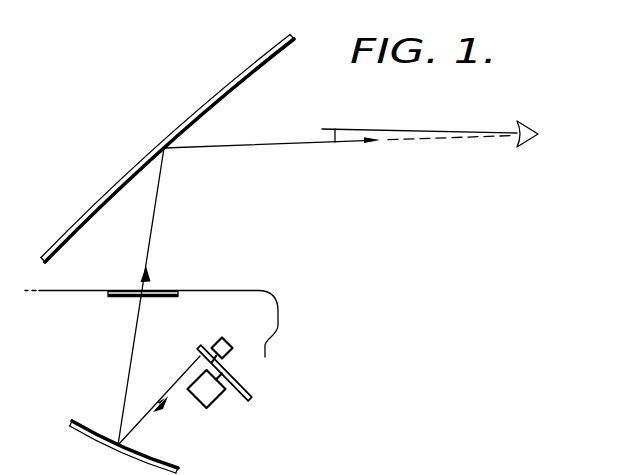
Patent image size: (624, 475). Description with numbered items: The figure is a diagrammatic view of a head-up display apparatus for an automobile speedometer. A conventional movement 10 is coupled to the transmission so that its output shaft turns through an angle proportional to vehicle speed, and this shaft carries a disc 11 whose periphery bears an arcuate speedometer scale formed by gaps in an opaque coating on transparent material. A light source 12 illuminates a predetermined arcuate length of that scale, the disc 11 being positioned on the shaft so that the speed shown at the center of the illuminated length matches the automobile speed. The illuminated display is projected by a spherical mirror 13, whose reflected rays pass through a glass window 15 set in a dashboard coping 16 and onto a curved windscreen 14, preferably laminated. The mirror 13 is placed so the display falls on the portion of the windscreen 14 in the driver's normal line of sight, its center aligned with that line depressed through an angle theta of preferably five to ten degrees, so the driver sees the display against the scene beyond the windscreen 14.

The movement 10 is at (212, 405).
The disc 11 is at (247, 391).
The light source 12 is at (217, 339).
The spherical mirror 13 is at (164, 466).
The curved windscreen 14 is at (98, 200).
The glass window 15 is at (158, 289).
The dashboard coping 16 is at (283, 302).